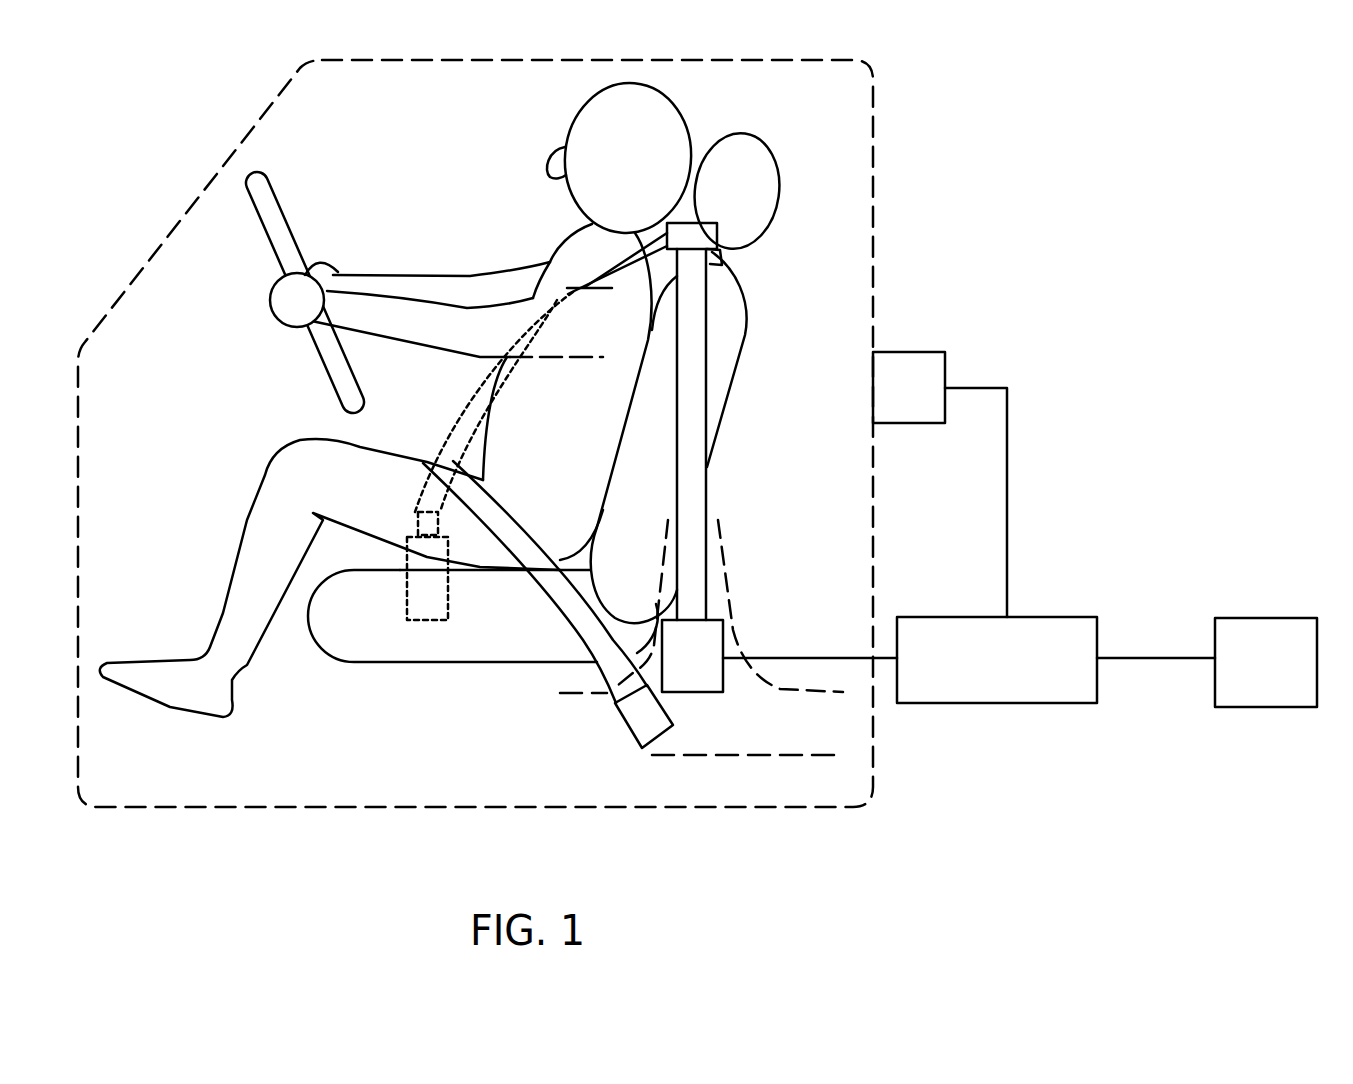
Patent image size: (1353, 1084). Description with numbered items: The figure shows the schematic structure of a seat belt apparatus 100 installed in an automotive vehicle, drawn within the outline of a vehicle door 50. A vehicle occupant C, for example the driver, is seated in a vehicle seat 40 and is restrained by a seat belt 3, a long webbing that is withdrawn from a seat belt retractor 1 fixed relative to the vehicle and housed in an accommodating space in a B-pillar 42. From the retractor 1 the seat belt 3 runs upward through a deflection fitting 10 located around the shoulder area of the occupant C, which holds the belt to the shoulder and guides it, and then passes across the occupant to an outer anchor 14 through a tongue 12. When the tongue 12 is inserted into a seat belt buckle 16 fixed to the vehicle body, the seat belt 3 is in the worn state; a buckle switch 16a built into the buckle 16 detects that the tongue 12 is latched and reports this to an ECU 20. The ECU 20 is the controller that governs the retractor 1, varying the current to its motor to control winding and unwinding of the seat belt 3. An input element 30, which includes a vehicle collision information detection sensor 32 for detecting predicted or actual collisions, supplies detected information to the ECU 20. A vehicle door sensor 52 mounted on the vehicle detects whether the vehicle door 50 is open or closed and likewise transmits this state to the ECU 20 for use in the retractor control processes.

The seat belt retractor 1 is at (698, 693).
The seat belt 3 is at (707, 503).
The deflection fitting 10 is at (717, 220).
The tongue 12 is at (413, 517).
The outer anchor 14 is at (642, 713).
The seat belt buckle 16 is at (454, 639).
The buckle switch 16a is at (433, 602).
The ECU 20 is at (1042, 617).
The input element 30 is at (1266, 599).
The vehicle collision information detection sensor 32 is at (1245, 618).
The vehicle seat 40 is at (745, 340).
The B-pillar 42 is at (730, 590).
The vehicle door 50 is at (873, 150).
The vehicle door sensor 52 is at (902, 370).
The seat belt apparatus 100 is at (1038, 303).
The vehicle occupant C is at (518, 263).